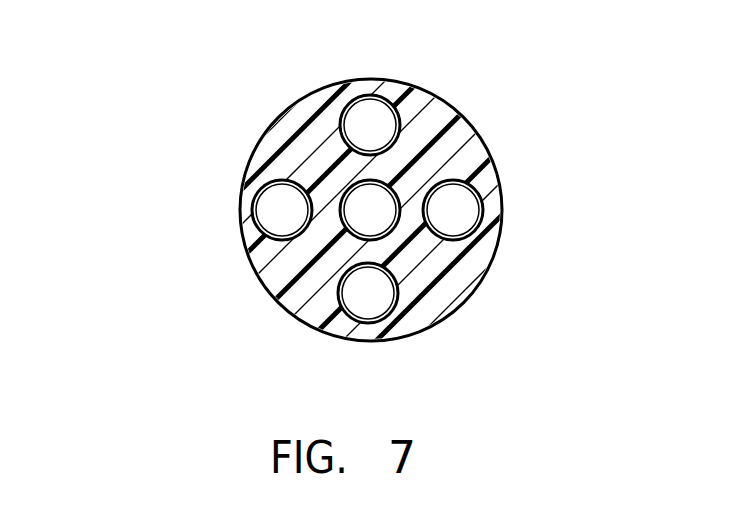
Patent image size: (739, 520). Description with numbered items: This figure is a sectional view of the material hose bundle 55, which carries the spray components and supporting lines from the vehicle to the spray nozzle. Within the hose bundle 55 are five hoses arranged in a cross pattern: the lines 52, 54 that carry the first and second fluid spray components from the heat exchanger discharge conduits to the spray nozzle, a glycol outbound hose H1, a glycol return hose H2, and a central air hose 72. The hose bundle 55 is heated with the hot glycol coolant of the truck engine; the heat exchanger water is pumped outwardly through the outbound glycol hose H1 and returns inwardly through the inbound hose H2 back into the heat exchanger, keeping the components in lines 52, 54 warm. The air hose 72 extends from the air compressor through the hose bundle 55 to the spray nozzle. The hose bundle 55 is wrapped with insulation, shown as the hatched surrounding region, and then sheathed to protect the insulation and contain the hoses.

The hose bundle 55 is at (194, 260).
The line 52 is at (267, 215).
The line 54 is at (465, 201).
The air hose 72 is at (469, 165).
The glycol outbound hose H1 is at (373, 113).
The glycol return hose H2 is at (373, 298).